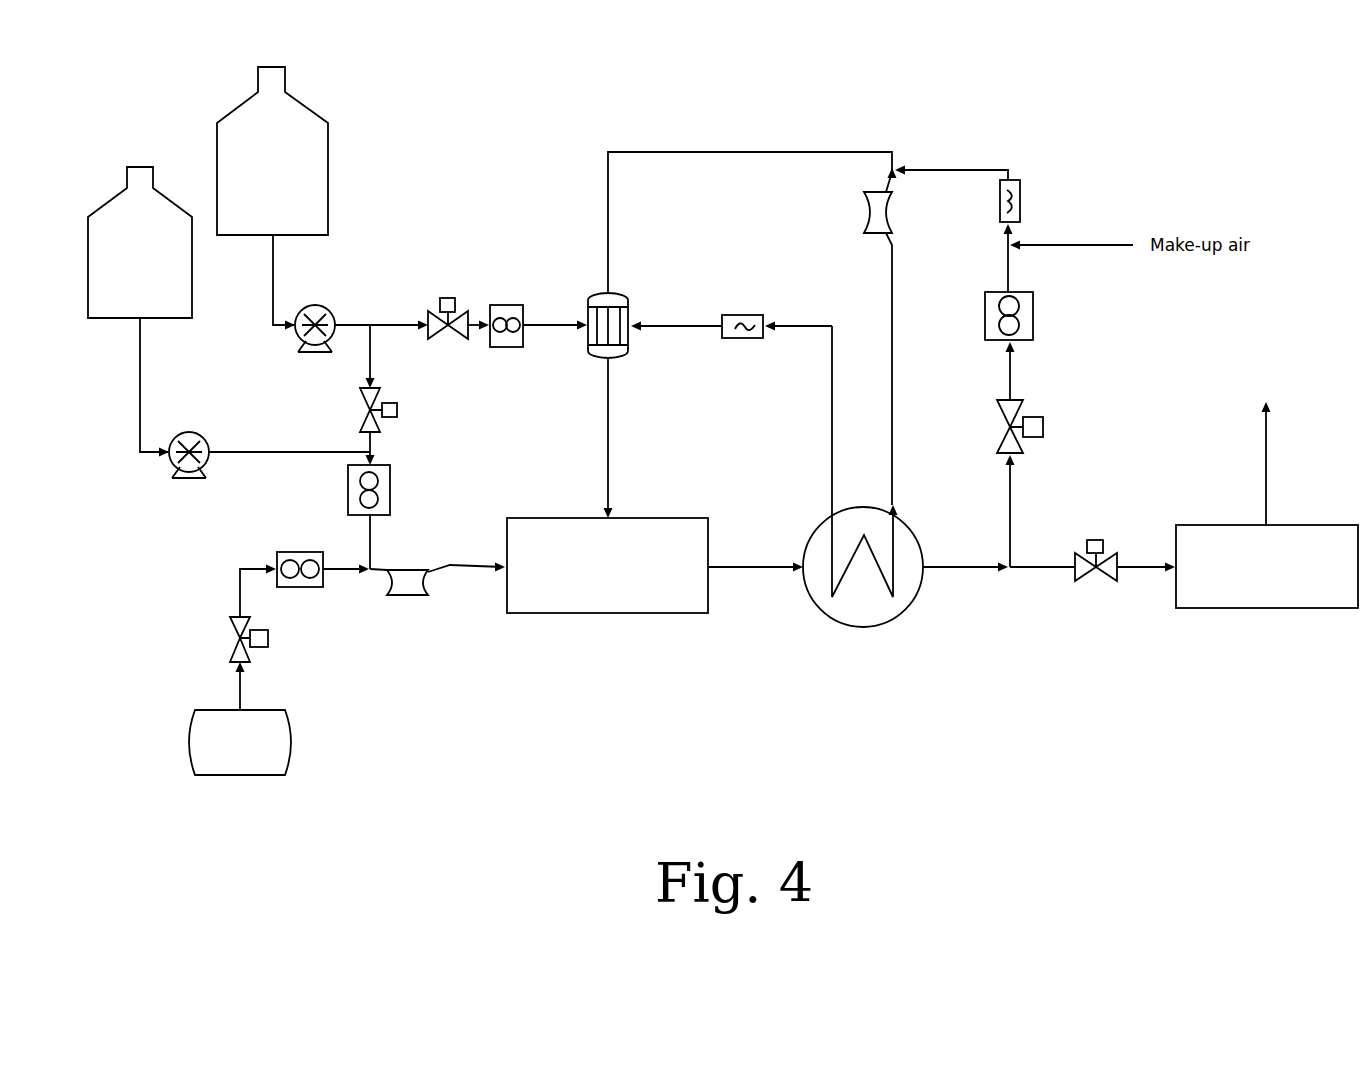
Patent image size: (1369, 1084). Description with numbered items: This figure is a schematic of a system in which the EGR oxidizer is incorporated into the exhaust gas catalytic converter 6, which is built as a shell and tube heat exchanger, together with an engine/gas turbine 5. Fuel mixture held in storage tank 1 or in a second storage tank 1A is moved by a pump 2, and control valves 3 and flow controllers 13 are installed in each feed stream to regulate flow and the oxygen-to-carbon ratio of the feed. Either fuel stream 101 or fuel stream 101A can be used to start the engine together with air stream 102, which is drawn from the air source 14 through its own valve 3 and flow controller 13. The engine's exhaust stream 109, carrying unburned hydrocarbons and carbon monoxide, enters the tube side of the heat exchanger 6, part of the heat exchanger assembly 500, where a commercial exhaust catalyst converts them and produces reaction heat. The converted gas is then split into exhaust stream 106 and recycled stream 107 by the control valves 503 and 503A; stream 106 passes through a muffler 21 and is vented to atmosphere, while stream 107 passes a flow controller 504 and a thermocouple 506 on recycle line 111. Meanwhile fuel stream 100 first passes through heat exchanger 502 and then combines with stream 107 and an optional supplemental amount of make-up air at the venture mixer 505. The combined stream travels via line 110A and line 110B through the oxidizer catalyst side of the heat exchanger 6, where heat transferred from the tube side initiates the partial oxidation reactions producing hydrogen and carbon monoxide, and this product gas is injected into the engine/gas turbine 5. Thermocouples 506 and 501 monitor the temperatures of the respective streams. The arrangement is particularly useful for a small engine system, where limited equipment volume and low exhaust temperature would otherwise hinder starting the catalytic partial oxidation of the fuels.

The storage tank 1 is at (272, 151).
The second fuel storage tank 1A is at (140, 242).
The pump 2 is at (252, 399).
The control valve 3 is at (349, 475).
The flow controller 13 is at (400, 432).
The air source 14 is at (240, 742).
The engine/gas turbine 5 is at (607, 565).
The exhaust gas catalytic converter heat exchanger 6 is at (863, 567).
The muffler 21 is at (1267, 491).
The fuel stream 100 is at (613, 233).
The fuel stream 101 is at (391, 447).
The alternate fuel stream 101A is at (289, 436).
The air stream 102 is at (346, 637).
The exhaust stream 106 is at (1049, 576).
The recycled exhaust stream 107 is at (993, 454).
The engine exhaust stream 109 is at (755, 577).
The oxidizer outlet line 110A is at (870, 336).
The oxidizer return line 110B is at (750, 461).
The recycle line 111 is at (951, 164).
The heat exchanger assembly 500 is at (863, 584).
The thermocouple 501 is at (731, 343).
The heat exchanger 502 is at (632, 315).
The control valve 503 is at (1041, 426).
The control valve 503A is at (1100, 545).
The flow controller 504 is at (1039, 316).
The venture mixer 505 is at (857, 220).
The thermocouple 506 is at (990, 201).